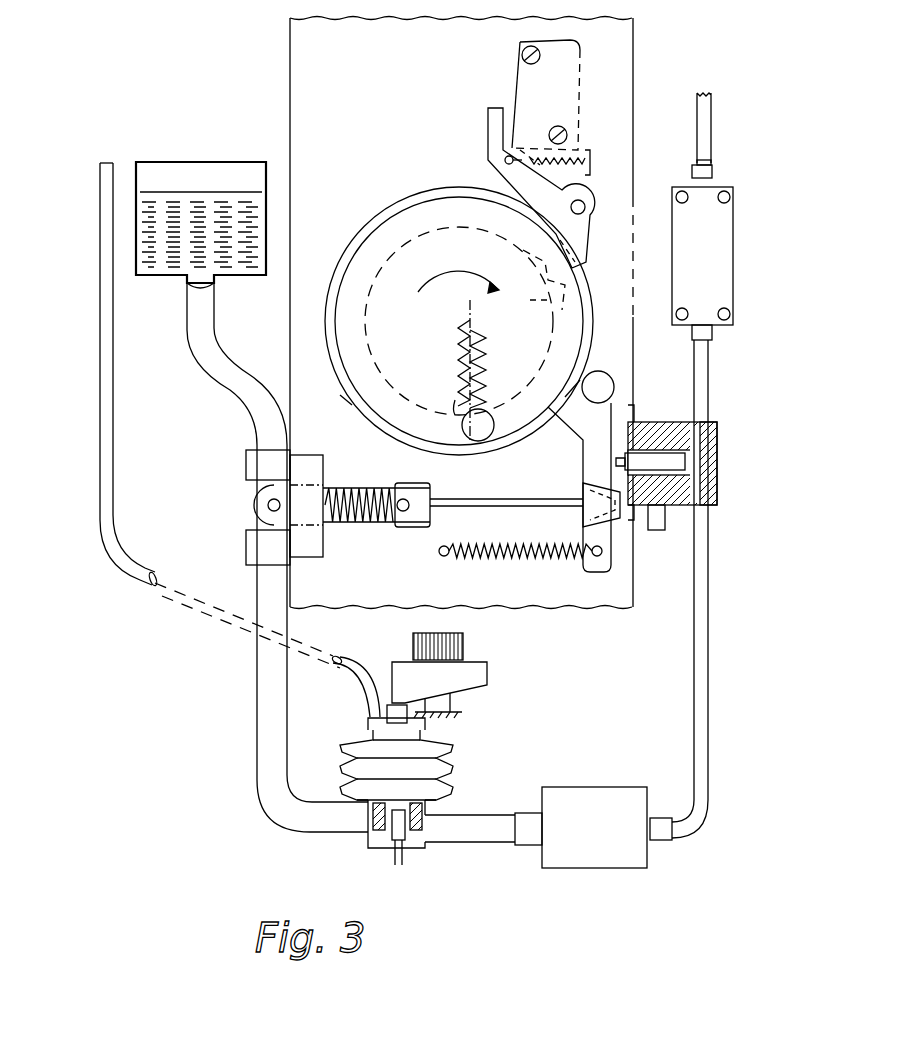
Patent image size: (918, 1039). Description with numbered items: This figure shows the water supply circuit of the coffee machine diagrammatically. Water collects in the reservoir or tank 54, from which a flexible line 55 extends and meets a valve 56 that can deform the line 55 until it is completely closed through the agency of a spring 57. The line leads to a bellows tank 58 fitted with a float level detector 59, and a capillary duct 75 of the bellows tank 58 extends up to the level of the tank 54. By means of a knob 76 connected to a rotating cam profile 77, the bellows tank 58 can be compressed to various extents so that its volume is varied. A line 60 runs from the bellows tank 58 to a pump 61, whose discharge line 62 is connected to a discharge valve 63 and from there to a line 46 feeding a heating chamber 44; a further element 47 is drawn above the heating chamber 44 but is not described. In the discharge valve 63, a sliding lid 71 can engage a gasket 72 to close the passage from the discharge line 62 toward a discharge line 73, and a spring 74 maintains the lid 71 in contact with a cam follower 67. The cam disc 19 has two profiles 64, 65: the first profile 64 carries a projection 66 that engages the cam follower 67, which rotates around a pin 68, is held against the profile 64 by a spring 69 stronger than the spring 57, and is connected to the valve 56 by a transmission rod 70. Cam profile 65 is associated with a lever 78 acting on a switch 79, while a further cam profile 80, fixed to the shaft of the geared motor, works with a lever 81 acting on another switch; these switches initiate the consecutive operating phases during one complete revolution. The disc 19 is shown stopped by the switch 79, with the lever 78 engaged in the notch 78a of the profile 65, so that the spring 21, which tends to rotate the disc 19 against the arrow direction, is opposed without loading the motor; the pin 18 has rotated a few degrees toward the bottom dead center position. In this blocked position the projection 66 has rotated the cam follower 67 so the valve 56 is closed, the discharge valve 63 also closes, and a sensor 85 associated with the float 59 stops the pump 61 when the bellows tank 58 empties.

The cam disc 19 is at (418, 245).
The cam profile 65 is at (327, 275).
The cam profile 64 is at (352, 392).
The spring 21 is at (484, 360).
The cam profile 80 is at (462, 398).
The lever 81 is at (555, 312).
The pin 18 is at (478, 445).
The pin 68 is at (600, 380).
The switch 79 is at (522, 80).
The lever 78 is at (590, 250).
The notch 78a is at (590, 262).
The cable 47 is at (705, 132).
The heating chamber 44 is at (718, 260).
The line 46 is at (710, 378).
The discharge line 62 is at (710, 728).
The sliding lid 71 is at (650, 440).
The gasket 72 is at (710, 448).
The discharge valve 63 is at (718, 468).
The discharge line 73 is at (668, 518).
The cam follower 67 is at (582, 470).
The projection 66 is at (548, 432).
The spring 74 is at (618, 516).
The spring 57 is at (346, 486).
The transmission rod 70 is at (497, 508).
The spring 69 is at (552, 562).
The valve 56 is at (246, 508).
The water-collecting reservoir 54 is at (167, 272).
The flexible line 55 is at (216, 380).
The capillary duct 75 is at (100, 370).
The knob 76 is at (463, 650).
The rotating cam profile 77 is at (452, 682).
The bellows tank 58 is at (460, 762).
The float level detector 59 is at (425, 822).
The sensor 85 is at (396, 838).
The line 60 is at (470, 845).
The pump 61 is at (581, 802).